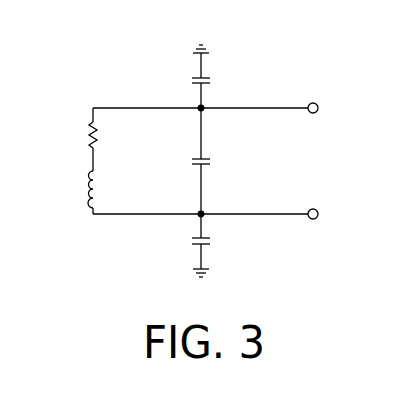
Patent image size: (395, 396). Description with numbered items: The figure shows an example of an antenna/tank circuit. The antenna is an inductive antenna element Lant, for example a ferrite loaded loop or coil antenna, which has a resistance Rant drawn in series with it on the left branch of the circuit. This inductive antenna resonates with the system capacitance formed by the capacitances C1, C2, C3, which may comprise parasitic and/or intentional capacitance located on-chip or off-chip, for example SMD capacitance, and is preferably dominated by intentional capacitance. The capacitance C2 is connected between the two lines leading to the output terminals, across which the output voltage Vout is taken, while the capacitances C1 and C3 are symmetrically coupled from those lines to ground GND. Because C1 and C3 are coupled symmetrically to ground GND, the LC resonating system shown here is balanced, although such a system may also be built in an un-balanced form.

The system capacitance C1 is at (222, 80).
The system capacitance C2 is at (223, 162).
The system capacitance C3 is at (225, 240).
The antenna resistance Rant is at (67, 135).
The inductive antenna element Lant is at (65, 189).
The output voltage Vout is at (348, 164).
The ground GND is at (236, 158).